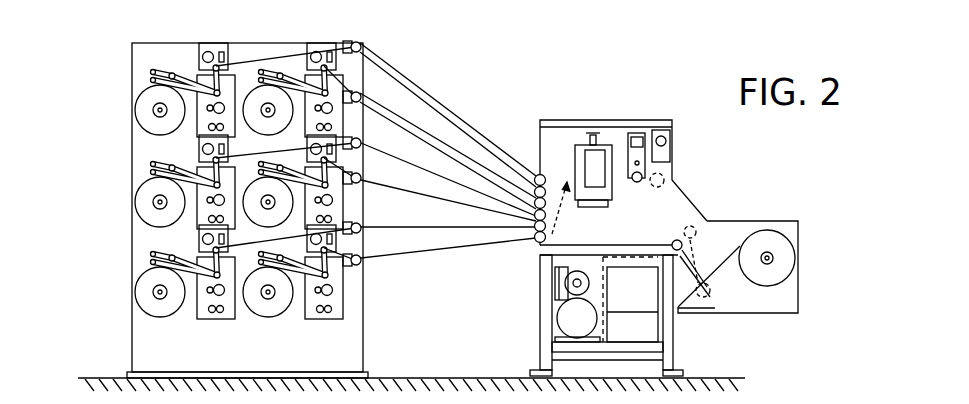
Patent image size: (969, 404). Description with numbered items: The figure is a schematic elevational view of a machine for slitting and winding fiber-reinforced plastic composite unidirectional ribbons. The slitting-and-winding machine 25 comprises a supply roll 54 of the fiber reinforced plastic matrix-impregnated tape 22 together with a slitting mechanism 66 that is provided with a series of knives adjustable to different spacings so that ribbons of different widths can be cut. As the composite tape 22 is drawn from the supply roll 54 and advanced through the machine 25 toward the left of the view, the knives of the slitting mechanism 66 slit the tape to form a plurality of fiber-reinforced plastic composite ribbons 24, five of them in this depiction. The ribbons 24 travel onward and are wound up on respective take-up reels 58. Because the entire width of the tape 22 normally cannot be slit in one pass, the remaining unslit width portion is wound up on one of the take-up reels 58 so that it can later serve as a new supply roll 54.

The take-up reels 58 is at (248, 103).
The fiber-reinforced plastic composite ribbons 24 is at (458, 140).
The ribbon slitting machine 25 is at (664, 210).
The slitting mechanism 66 is at (638, 126).
The fiber reinforced plastic matrix-impregnated tape 22 is at (722, 250).
The supply roll 54 is at (763, 238).